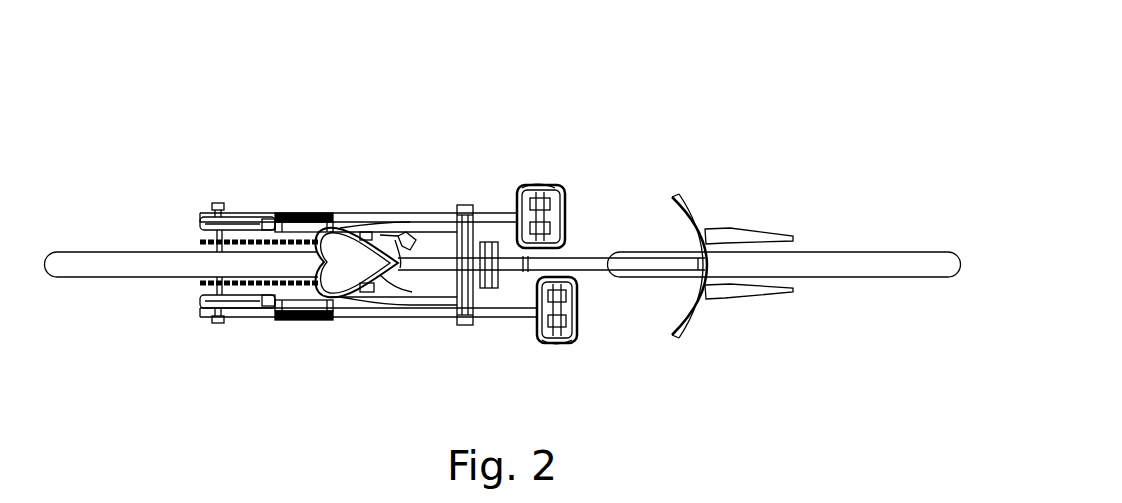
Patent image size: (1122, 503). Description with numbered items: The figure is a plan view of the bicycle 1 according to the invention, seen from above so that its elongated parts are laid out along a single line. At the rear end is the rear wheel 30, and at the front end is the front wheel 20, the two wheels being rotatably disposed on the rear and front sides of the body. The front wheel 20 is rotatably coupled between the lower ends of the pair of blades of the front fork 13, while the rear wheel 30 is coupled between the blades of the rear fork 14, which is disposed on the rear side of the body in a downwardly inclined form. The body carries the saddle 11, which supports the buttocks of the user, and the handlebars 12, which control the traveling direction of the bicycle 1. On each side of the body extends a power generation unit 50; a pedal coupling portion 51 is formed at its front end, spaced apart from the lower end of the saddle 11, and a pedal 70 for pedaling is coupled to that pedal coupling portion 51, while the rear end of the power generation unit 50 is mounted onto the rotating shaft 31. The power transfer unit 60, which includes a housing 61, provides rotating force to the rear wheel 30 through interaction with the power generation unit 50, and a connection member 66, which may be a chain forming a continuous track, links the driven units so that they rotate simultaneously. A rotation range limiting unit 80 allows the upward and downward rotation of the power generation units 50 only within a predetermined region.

The bicycle 1 is at (117, 72).
The saddle 11 is at (387, 297).
The handlebars 12 is at (674, 196).
The front fork 13 is at (727, 232).
The rear fork 14 is at (316, 222).
The front wheel 20 is at (883, 262).
The rear wheel 30 is at (92, 262).
The rotating shaft 31 is at (213, 280).
The power generation unit 50 is at (420, 213).
The pedal coupling portion 51 is at (527, 186).
The power transfer unit 60 is at (292, 204).
The housing 61 is at (285, 222).
The connection member 66 is at (242, 218).
The pedal 70 is at (568, 176).
The rotation range limiting unit 80 is at (498, 302).